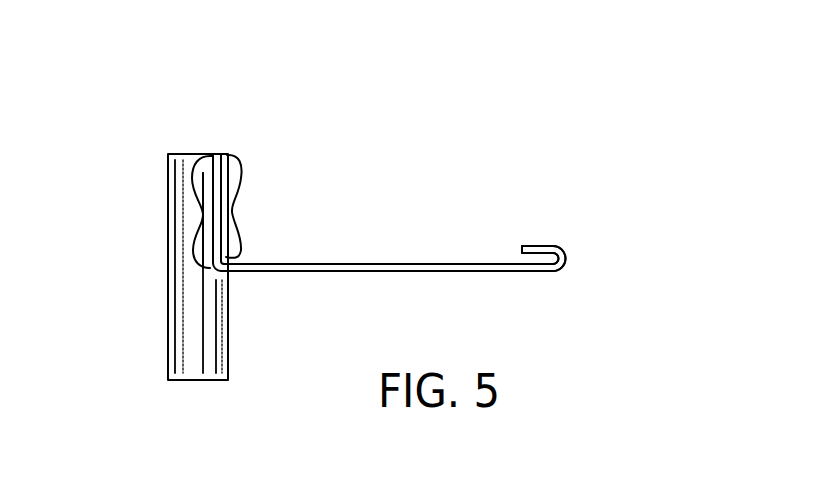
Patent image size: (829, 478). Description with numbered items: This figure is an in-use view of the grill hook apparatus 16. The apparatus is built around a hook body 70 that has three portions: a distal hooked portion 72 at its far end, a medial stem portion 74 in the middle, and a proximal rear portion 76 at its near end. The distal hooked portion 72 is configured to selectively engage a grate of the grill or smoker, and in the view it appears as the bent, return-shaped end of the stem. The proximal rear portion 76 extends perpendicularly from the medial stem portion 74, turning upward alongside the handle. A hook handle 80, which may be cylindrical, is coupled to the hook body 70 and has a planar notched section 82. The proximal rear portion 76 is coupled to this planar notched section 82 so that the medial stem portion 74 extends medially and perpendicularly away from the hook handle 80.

The grill hook apparatus 16 is at (408, 120).
The hook body 70 is at (353, 263).
The distal hooked portion 72 is at (521, 238).
The medial stem portion 74 is at (523, 277).
The proximal rear portion 76 is at (236, 209).
The hook handle 80 is at (182, 301).
The planar notched section 82 is at (197, 210).